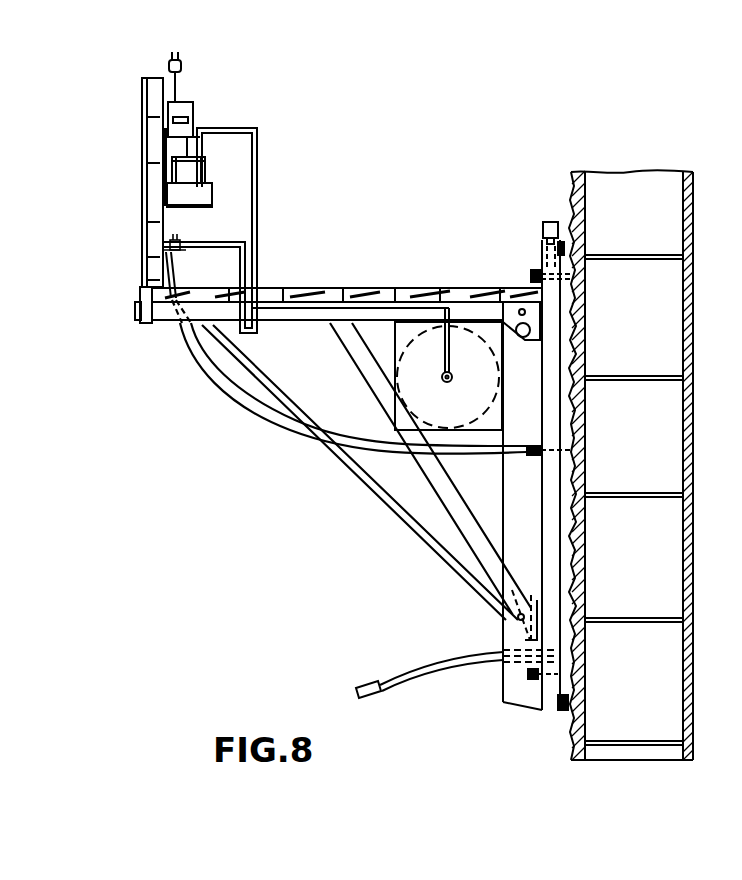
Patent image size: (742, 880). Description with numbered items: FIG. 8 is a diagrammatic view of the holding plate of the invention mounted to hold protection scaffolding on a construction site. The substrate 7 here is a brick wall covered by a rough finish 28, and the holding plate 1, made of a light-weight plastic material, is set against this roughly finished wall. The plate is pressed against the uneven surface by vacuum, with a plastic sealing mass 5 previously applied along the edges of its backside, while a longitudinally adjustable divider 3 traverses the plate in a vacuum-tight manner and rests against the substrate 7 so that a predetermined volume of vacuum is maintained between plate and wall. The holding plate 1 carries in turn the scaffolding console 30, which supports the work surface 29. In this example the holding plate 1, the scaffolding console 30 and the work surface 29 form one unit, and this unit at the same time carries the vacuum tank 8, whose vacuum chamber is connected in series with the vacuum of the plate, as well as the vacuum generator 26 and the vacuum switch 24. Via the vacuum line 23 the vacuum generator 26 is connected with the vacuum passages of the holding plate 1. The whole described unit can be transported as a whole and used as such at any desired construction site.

The holding plate 1 is at (545, 690).
The longitudinally adjustable divider 3 is at (552, 272).
The plastic sealing mass 5 is at (566, 705).
The substrate 7 is at (664, 200).
The vacuum tank 8 is at (465, 355).
The vacuum line 23 is at (220, 378).
The vacuum switch 24 is at (190, 108).
The vacuum generator 26 is at (190, 194).
The rough finish 28 is at (576, 190).
The work surface 29 is at (405, 290).
The scaffolding console 30 is at (357, 363).